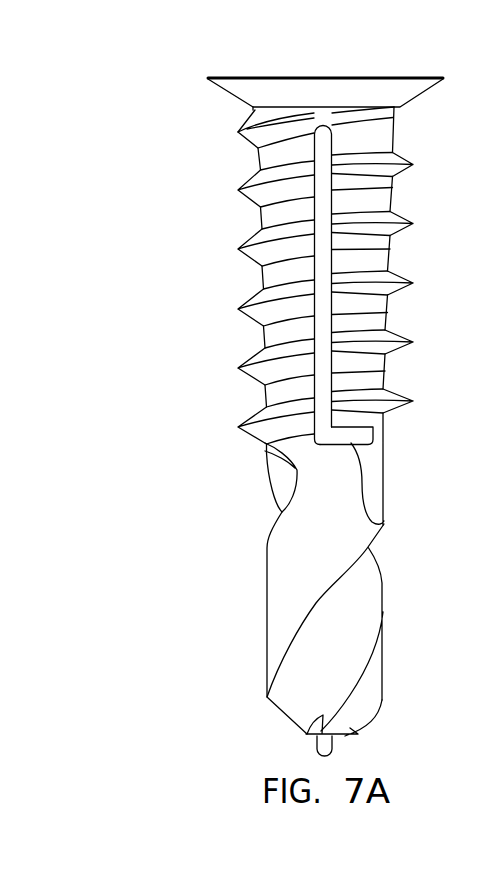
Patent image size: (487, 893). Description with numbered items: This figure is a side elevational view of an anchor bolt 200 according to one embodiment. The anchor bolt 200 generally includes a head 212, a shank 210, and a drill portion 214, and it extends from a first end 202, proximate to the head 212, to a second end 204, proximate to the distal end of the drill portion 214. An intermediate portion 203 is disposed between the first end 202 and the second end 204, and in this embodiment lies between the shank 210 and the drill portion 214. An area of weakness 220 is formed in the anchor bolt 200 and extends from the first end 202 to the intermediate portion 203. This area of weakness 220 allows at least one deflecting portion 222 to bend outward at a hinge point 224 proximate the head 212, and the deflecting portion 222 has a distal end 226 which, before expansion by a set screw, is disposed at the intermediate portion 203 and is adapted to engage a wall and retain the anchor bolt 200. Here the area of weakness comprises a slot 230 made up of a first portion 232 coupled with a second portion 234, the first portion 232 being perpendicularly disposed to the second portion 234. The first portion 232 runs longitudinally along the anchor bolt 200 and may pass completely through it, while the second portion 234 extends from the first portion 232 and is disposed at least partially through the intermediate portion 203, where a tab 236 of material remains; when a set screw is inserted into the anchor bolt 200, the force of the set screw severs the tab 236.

The anchor bolt 200 is at (287, 405).
The head 212 is at (230, 100).
The first end 202 is at (252, 109).
The hinge point 224 is at (382, 138).
The shank 210 is at (262, 215).
The area of weakness 220 is at (325, 200).
The first portion 232 is at (327, 263).
The deflecting portion 222 is at (373, 318).
The distal end 226 is at (361, 421).
The slot 230 is at (320, 330).
The tab 236 is at (378, 436).
The intermediate portion 203 is at (377, 461).
The second portion 234 is at (376, 523).
The drill portion 214 is at (268, 596).
The second end 204 is at (367, 712).